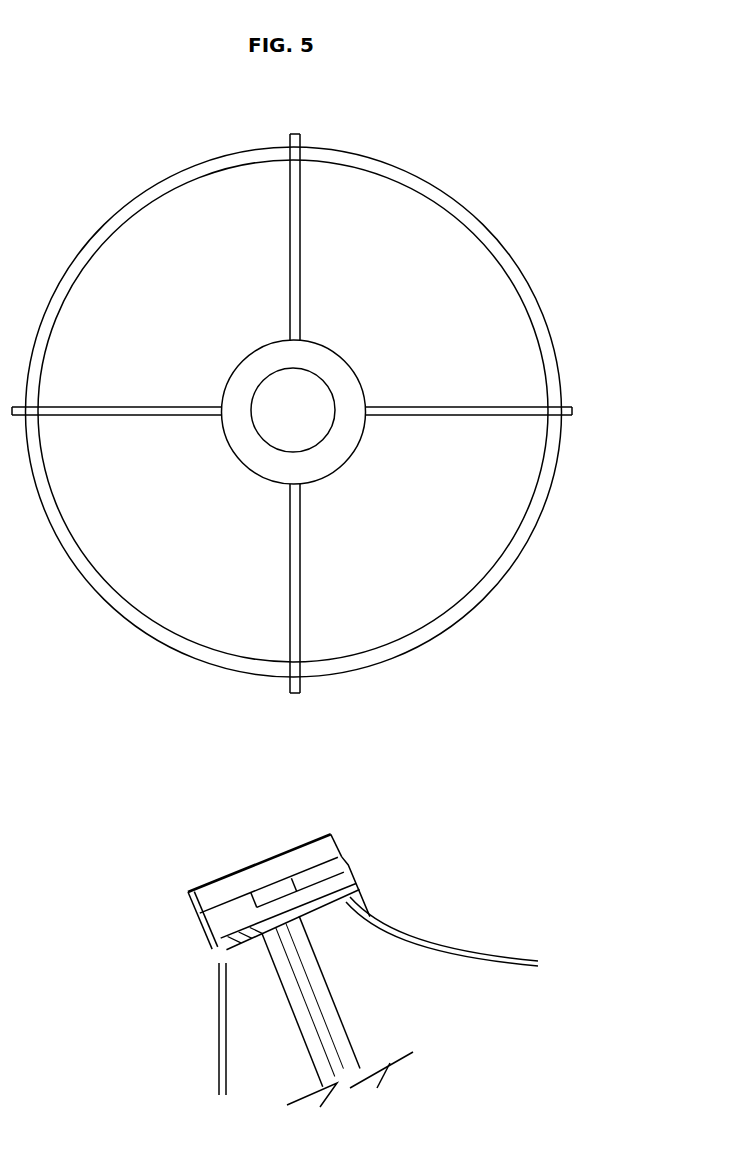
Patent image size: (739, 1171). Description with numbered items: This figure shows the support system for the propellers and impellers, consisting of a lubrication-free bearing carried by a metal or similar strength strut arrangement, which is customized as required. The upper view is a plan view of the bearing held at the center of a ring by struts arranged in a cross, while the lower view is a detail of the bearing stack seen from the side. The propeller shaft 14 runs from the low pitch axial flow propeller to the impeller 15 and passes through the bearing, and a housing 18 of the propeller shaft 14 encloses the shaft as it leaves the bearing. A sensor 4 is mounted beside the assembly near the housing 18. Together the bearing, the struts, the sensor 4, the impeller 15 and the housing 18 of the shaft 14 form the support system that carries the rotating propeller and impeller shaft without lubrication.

The sensor 4 is at (222, 1057).
The propeller shaft 14 is at (300, 992).
The impeller 15 is at (330, 913).
The housing 18 is at (332, 992).